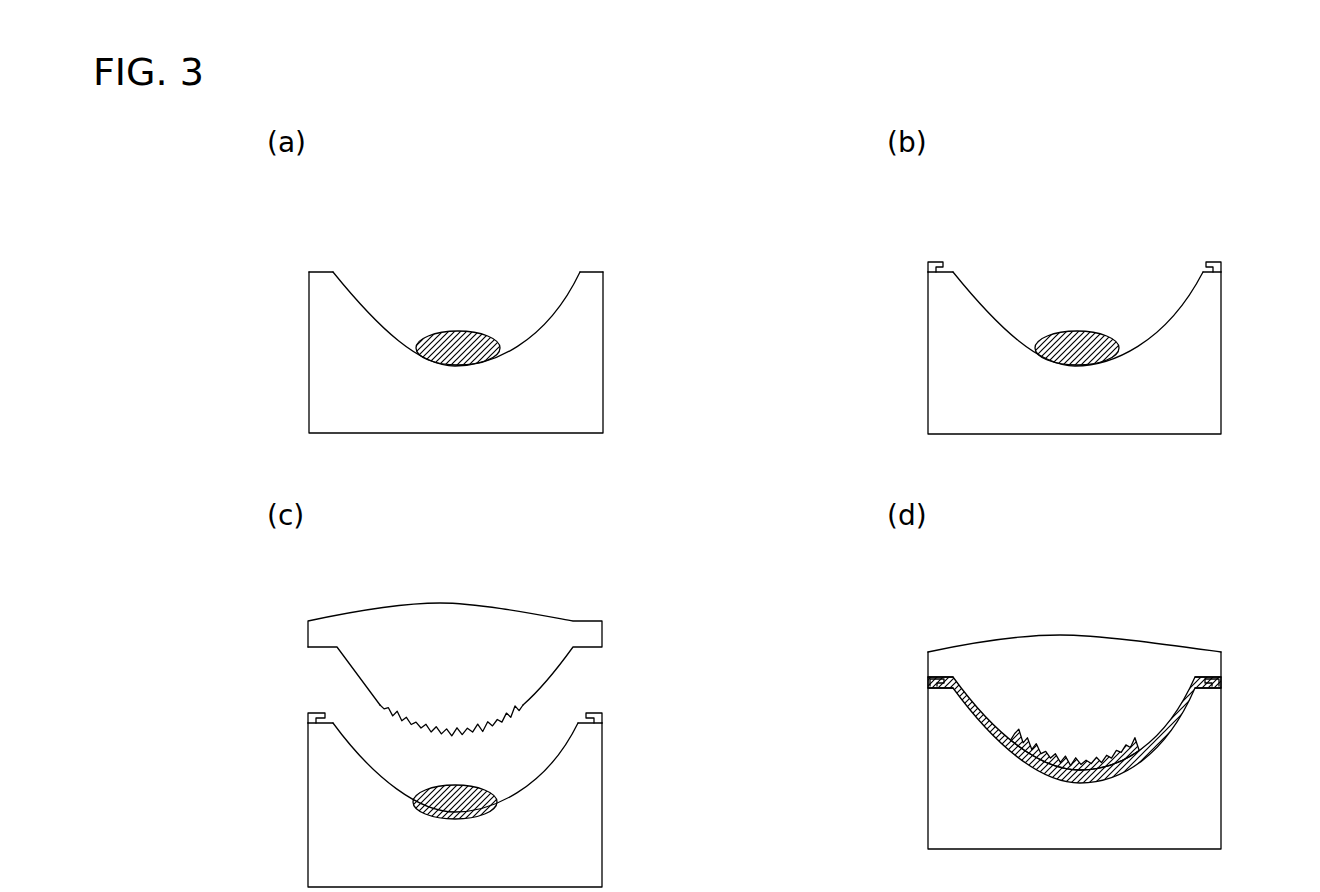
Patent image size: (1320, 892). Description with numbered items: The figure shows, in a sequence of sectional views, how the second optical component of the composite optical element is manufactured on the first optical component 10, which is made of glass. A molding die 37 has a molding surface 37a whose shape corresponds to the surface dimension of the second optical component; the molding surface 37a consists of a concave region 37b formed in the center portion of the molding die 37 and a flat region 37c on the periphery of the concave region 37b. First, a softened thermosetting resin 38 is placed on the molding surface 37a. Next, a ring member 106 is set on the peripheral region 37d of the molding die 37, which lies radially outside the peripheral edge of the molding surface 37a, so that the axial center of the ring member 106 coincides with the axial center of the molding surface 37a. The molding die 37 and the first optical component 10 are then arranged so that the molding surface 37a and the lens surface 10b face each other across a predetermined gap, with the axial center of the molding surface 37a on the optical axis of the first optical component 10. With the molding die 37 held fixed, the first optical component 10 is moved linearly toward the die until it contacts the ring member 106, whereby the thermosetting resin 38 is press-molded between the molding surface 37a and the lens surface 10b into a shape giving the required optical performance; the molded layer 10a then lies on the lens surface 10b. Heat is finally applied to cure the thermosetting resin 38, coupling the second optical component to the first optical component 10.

The first optical component 10 is at (549, 612).
The molded layer 10a is at (1190, 697).
The lens surface 10b is at (557, 675).
The molding die 37 is at (307, 365).
The molding surface 37a is at (709, 272).
The concave region 37b is at (547, 310).
The flat region 37c is at (583, 272).
The peripheral region 37d is at (313, 272).
The thermosetting resin 38 is at (462, 332).
The ring member 106 is at (1220, 264).